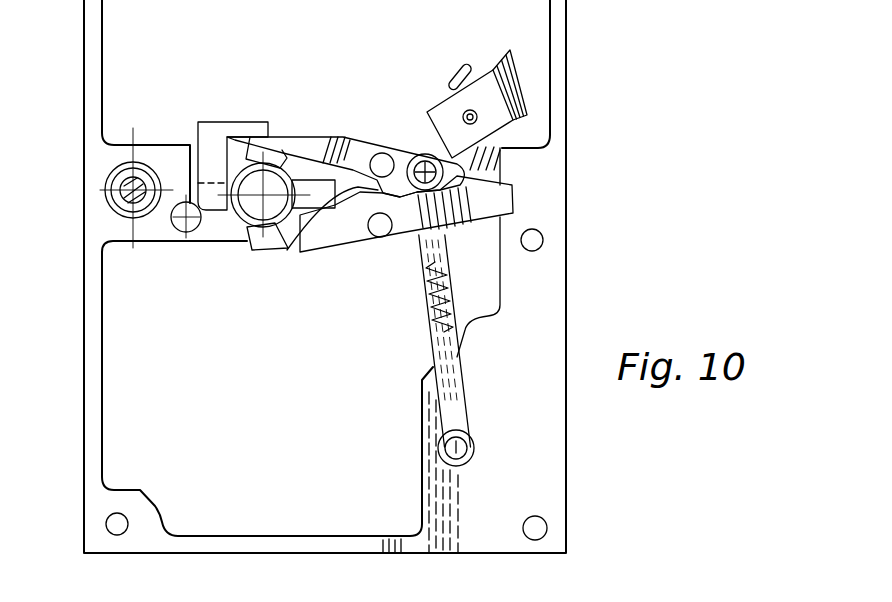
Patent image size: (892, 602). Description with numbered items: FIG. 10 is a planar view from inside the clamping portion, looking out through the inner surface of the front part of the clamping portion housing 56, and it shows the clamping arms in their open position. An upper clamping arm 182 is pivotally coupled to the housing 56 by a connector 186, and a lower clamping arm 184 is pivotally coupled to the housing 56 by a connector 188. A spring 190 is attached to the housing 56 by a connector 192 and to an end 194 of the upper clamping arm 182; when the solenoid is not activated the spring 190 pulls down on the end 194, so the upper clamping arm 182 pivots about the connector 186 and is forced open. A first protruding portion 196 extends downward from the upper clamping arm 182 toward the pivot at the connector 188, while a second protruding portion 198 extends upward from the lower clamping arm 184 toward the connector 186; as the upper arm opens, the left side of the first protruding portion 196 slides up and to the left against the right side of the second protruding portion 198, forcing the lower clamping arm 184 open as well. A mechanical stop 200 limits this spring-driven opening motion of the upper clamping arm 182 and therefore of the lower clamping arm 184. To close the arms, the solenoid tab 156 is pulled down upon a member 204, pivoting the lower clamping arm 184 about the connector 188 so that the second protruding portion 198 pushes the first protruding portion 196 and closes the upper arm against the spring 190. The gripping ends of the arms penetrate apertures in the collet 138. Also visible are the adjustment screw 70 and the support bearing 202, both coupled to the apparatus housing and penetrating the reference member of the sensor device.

The clamping portion housing 56 is at (540, 337).
The adjustment screw 70 is at (116, 208).
The collet 138 is at (280, 150).
The tab 156 is at (460, 70).
The upper clamping arm 182 is at (322, 135).
The lower clamping arm 184 is at (358, 240).
The connector 186 is at (380, 152).
The connector 188 is at (385, 237).
The spring 190 is at (443, 297).
The connector 192 is at (474, 434).
The end of the upper clamping arm 194 is at (445, 175).
The first protruding portion 196 is at (296, 235).
The second protruding portion 198 is at (345, 225).
The mechanical stop 200 is at (198, 122).
The support bearing 202 is at (185, 238).
The member 204 is at (517, 92).